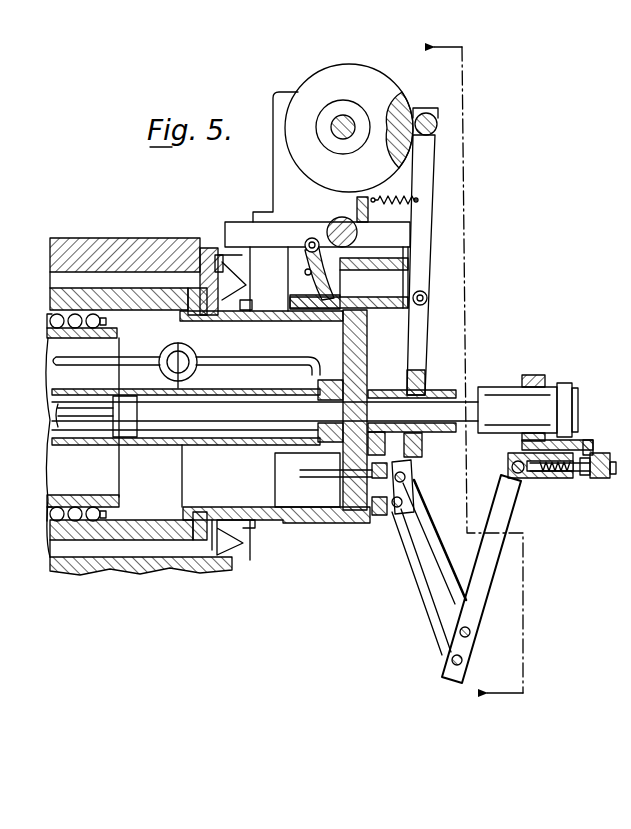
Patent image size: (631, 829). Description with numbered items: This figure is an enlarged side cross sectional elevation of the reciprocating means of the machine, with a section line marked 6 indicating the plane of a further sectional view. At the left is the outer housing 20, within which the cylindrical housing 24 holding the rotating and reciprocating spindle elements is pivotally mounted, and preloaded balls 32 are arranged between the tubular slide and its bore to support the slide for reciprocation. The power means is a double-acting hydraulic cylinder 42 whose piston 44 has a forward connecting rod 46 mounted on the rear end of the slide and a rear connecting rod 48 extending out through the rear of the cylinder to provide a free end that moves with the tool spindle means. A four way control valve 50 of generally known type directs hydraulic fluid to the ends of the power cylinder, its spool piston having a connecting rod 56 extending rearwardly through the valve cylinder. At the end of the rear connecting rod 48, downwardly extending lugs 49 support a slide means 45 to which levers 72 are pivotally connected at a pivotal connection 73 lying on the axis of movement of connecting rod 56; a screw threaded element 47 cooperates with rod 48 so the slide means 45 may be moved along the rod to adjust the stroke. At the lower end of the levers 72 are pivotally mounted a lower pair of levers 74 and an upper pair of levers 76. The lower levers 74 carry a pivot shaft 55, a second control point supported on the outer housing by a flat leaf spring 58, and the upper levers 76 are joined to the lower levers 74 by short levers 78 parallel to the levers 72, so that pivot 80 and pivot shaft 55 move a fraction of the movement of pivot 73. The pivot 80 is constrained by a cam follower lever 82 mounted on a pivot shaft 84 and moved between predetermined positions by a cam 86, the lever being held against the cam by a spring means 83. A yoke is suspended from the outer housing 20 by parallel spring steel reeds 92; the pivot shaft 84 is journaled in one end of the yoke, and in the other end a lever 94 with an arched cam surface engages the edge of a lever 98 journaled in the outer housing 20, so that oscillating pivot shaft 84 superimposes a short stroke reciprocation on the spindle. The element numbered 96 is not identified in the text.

The outer housing 20 is at (164, 237).
The cylindrical housing 24 is at (60, 292).
The preloaded balls 32 is at (108, 322).
The double-acting hydraulic cylinder 42 is at (172, 442).
The piston 44 is at (122, 428).
The slide means 45 is at (568, 480).
The forward connecting rod 46 is at (80, 422).
The screw threaded element 47 is at (601, 455).
The rear connecting rod 48 is at (250, 412).
The lugs 49 is at (537, 374).
The four way control valve 50 is at (275, 470).
The pivot shaft 55 is at (379, 466).
The connecting rod 56 is at (345, 481).
The flat leaf spring 58 is at (393, 506).
The levers 72 is at (503, 523).
The pivotal connection 73 is at (511, 467).
The lower pair of levers 74 is at (416, 581).
The upper pair of levers 76 is at (445, 575).
The levers 78 is at (416, 493).
The pivot 80 is at (406, 478).
The cam follower lever 82 is at (430, 195).
The spring means 83 is at (392, 207).
The pivot shaft 84 is at (427, 298).
The cam 86 is at (365, 77).
The reeds 92 is at (343, 281).
The lever 94 is at (308, 263).
The shaft end 96 is at (339, 220).
The lever 98 is at (292, 300).
The section line 6- 6 is at (481, 373).